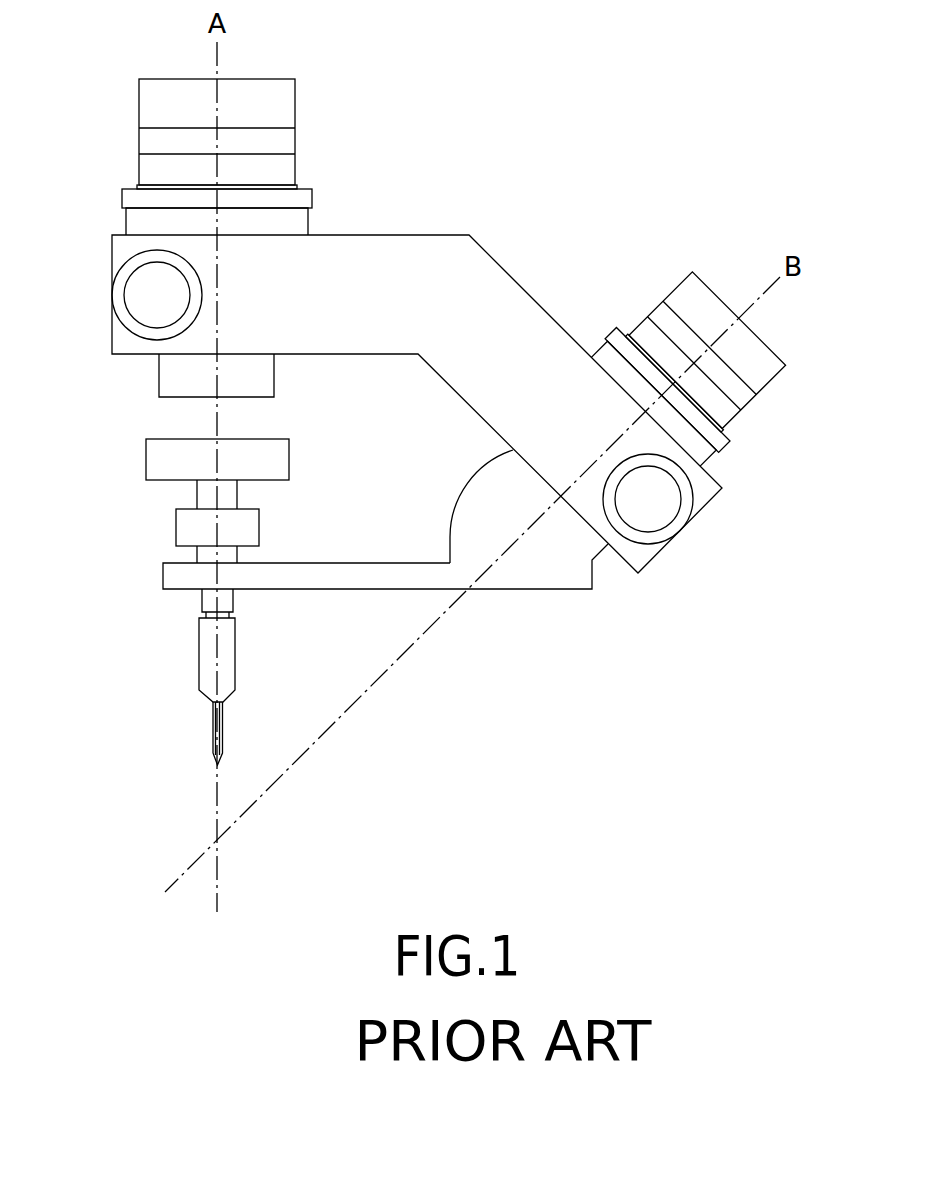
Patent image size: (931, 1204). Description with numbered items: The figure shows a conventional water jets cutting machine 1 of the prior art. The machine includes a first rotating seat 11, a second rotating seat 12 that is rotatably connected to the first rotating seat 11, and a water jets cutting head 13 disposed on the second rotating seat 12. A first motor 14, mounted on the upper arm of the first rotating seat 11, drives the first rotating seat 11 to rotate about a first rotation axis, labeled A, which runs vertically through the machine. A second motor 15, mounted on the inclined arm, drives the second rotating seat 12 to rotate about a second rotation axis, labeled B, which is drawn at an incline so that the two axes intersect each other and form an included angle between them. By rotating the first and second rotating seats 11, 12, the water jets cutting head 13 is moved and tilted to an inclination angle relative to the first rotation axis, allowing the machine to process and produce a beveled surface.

The water jets cutting machine 1 is at (620, 150).
The first rotating seat 11 is at (407, 258).
The second rotating seat 12 is at (553, 574).
The water jets cutting head 13 is at (199, 653).
The first motor 14 is at (287, 100).
The second motor 15 is at (683, 295).